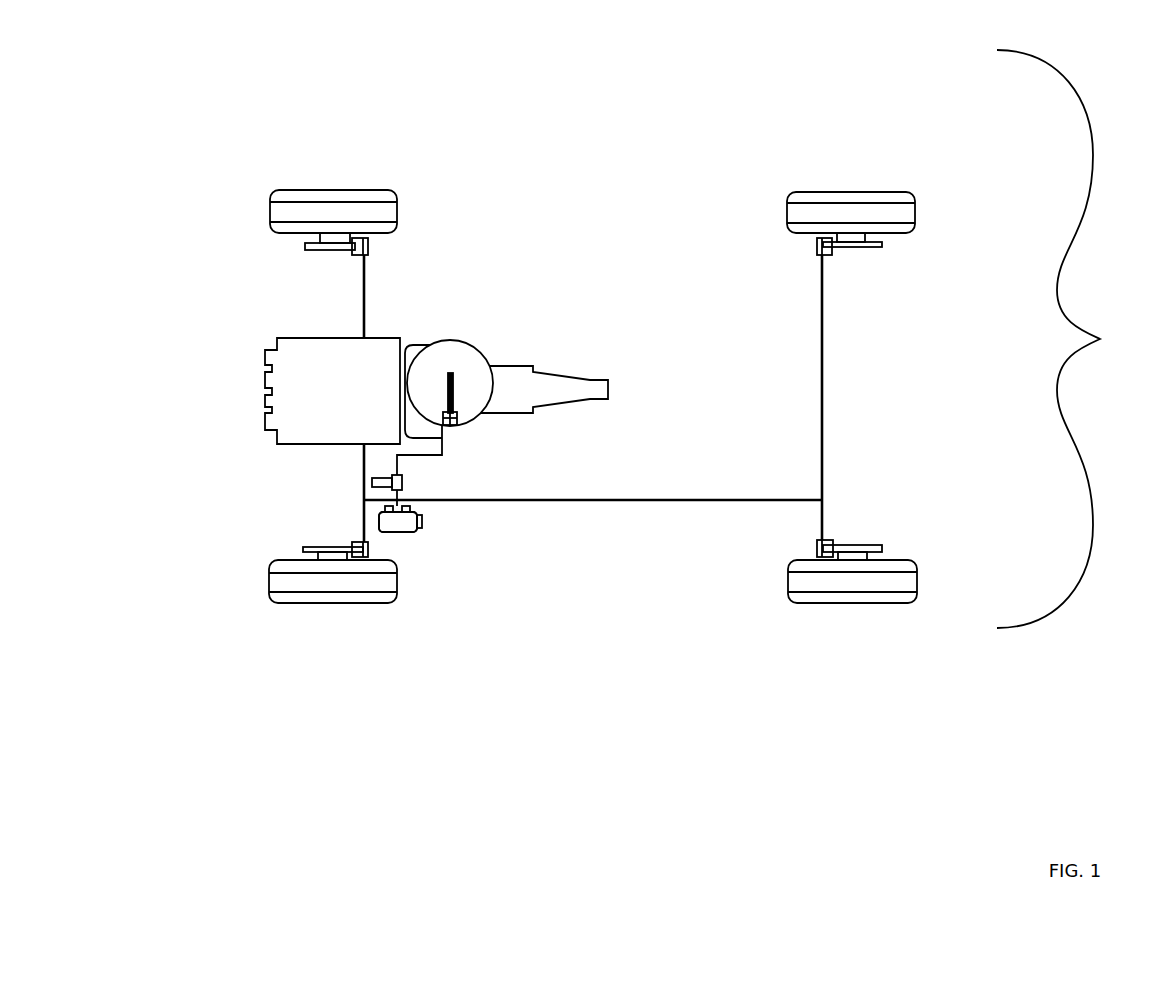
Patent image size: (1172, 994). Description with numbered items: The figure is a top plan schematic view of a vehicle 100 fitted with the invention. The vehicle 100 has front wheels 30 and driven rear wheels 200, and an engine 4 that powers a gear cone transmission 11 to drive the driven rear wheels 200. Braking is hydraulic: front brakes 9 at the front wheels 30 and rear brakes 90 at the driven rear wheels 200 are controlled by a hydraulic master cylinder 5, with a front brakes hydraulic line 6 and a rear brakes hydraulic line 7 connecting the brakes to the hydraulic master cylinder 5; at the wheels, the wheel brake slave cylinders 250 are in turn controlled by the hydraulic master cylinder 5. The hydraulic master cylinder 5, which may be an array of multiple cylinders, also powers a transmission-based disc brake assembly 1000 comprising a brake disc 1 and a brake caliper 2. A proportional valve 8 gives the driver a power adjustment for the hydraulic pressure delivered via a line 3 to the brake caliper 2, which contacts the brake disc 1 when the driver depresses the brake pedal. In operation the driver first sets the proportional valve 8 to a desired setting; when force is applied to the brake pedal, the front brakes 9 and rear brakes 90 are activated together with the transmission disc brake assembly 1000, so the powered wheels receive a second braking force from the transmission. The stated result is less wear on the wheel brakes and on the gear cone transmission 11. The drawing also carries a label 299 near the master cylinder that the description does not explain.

The vehicle 100 is at (1073, 339).
The front wheels 30 is at (290, 190).
The driven rear wheels 200 is at (903, 188).
The front brakes 9 is at (303, 247).
The rear brakes 90 is at (883, 252).
The wheel brake slave cylinders 250 is at (372, 247).
The front brakes hydraulic line 6 is at (366, 305).
The rear brakes hydraulic line 7 is at (823, 283).
The engine 4 is at (266, 415).
The transmission disc brake assembly 1000 is at (472, 336).
The brake disc 1 is at (453, 375).
The brake caliper 2 is at (459, 413).
The gear cone transmission 11 is at (493, 421).
The line 3 is at (426, 457).
The proportional valve 8 is at (405, 487).
The hydraulic master cylinder 5 is at (398, 532).
The pump reservoir 299 is at (439, 646).